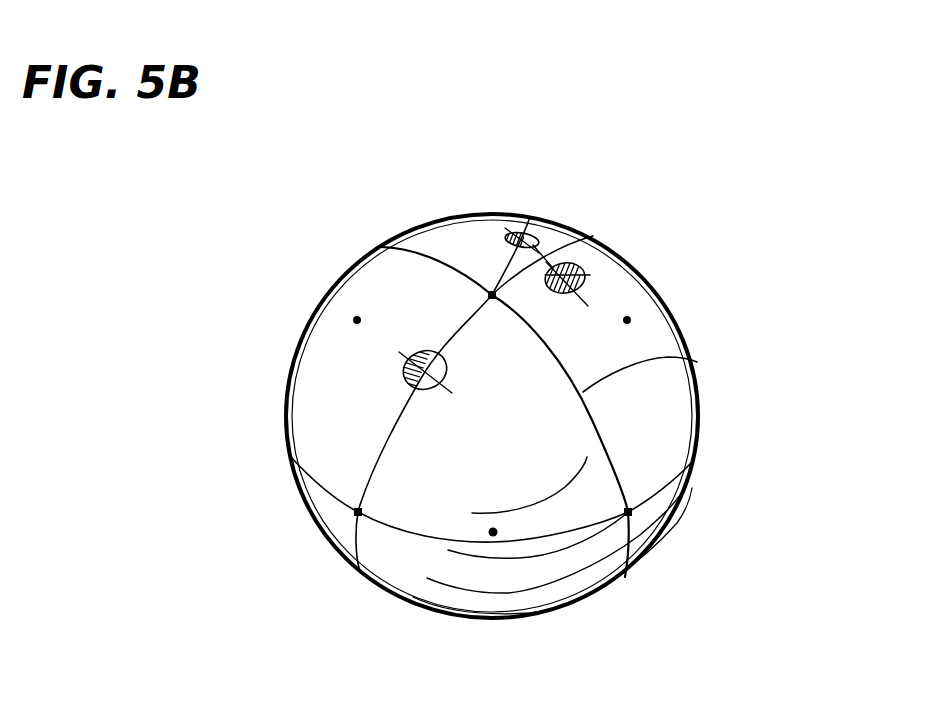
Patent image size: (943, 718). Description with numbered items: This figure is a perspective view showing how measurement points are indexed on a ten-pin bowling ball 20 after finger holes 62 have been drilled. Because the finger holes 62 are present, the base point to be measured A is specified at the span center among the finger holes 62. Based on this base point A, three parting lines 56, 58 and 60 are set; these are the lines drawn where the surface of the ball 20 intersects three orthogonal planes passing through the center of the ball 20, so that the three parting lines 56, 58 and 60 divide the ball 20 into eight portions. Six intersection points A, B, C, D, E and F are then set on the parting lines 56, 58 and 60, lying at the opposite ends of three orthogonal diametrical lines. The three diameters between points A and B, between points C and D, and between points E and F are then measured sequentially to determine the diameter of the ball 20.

The ten-pin bowling ball 20 is at (705, 395).
The parting line 56 is at (697, 362).
The parting line 58 is at (392, 428).
The parting line 60 is at (433, 537).
The finger holes 62 is at (414, 352).